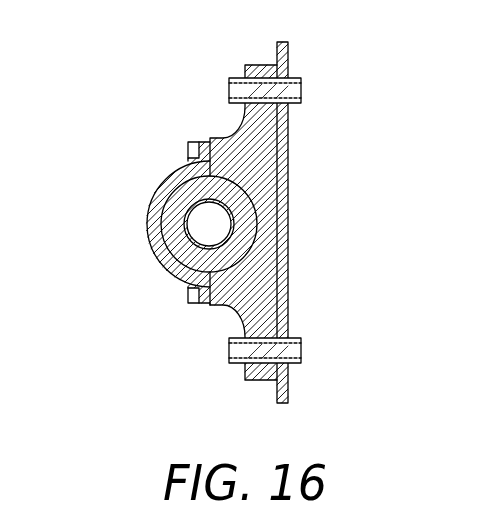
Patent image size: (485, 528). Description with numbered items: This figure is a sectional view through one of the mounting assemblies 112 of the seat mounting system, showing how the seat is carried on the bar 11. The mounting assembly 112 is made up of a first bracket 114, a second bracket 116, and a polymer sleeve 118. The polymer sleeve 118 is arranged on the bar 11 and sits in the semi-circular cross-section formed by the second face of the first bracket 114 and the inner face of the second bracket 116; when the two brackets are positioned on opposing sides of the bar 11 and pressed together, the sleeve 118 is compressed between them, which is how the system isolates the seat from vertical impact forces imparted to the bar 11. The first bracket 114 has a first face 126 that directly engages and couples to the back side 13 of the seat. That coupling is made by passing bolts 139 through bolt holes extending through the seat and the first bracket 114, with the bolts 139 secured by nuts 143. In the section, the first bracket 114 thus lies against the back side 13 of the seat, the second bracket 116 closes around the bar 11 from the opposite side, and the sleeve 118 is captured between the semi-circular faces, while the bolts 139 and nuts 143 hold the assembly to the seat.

The bar 11 is at (201, 208).
The back side of seat 13 is at (276, 398).
The mounting assembly 112 is at (133, 324).
The first bracket 114 is at (224, 136).
The second bracket 116 is at (160, 262).
The polymer sleeve 118 is at (165, 202).
The first face 126 is at (283, 70).
The bolt 139 is at (373, 334).
The nut 143 is at (229, 364).